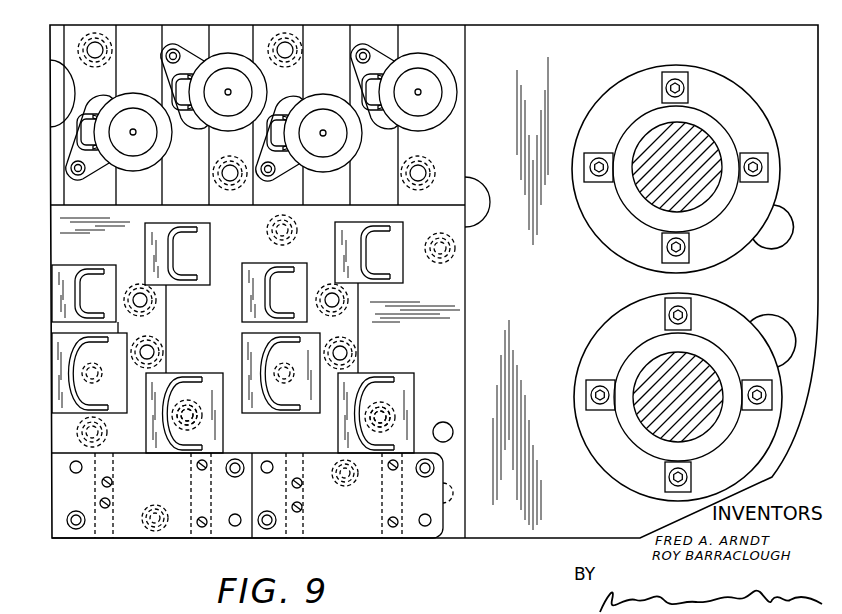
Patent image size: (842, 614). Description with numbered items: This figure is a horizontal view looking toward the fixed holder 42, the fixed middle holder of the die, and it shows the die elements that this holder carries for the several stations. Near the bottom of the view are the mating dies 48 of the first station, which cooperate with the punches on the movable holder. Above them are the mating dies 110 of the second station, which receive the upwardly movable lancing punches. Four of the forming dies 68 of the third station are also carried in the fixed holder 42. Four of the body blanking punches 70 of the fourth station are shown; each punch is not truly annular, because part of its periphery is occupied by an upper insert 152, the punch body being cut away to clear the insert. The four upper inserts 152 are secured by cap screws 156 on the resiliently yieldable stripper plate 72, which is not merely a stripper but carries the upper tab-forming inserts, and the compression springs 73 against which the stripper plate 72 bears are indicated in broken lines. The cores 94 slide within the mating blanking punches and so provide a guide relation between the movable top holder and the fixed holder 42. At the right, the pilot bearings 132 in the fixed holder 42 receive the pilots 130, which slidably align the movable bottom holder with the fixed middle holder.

The fixed holder 42 is at (646, 36).
The mating dies 48 is at (107, 497).
The forming dies 68 is at (227, 297).
The body blanking punch 70 is at (232, 56).
The stripper plate 72 is at (370, 33).
The compression springs 73 is at (97, 32).
The cores 94 is at (140, 124).
The mating dies 110 is at (90, 386).
The pilots 130 is at (645, 194).
The pilot bearings 132 is at (712, 125).
The upper inserts 152 is at (93, 97).
The cap screws 156 is at (174, 47).